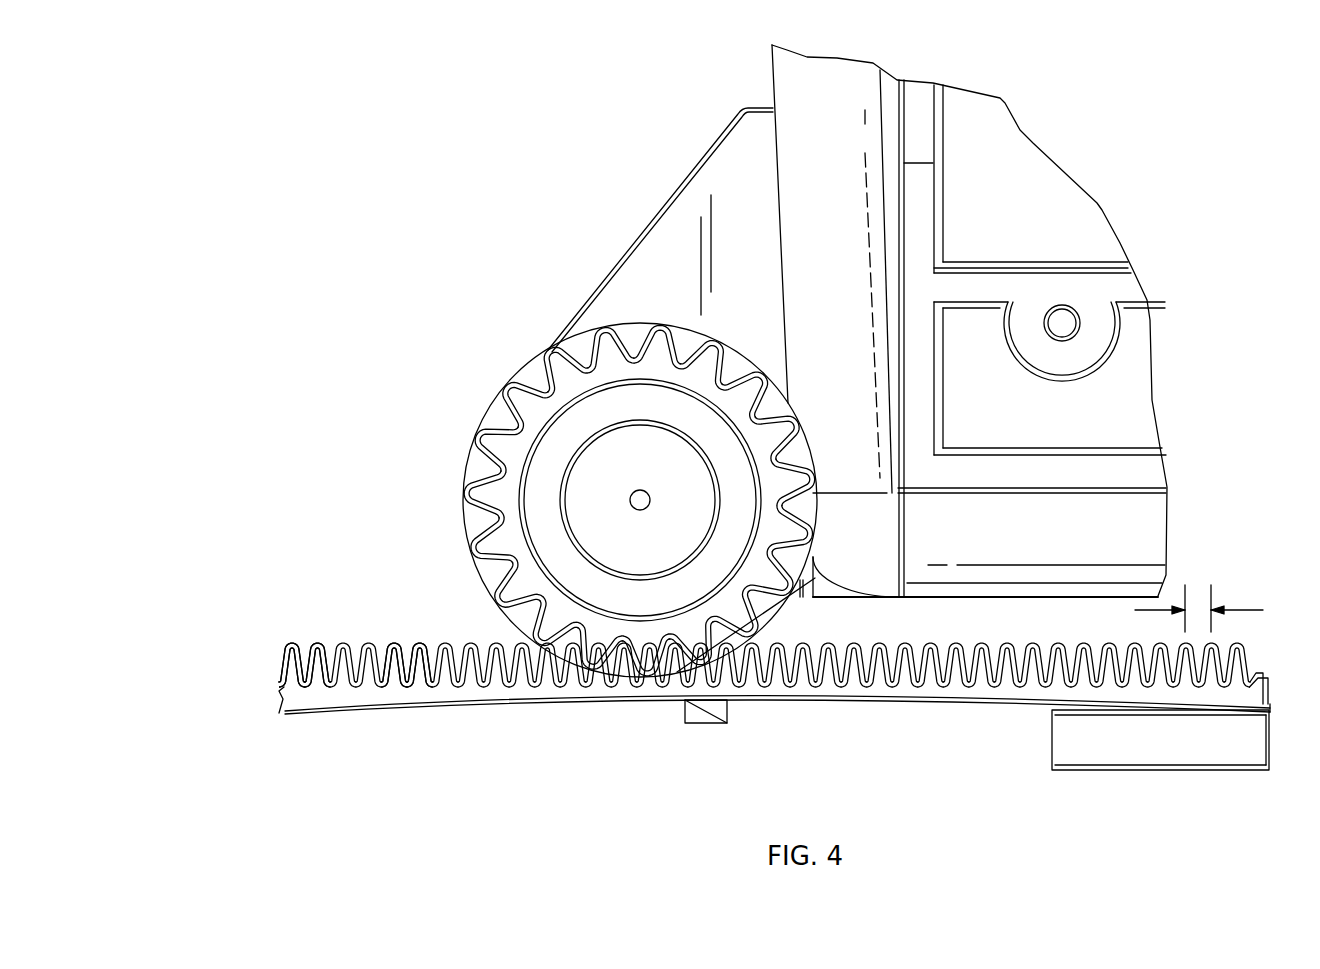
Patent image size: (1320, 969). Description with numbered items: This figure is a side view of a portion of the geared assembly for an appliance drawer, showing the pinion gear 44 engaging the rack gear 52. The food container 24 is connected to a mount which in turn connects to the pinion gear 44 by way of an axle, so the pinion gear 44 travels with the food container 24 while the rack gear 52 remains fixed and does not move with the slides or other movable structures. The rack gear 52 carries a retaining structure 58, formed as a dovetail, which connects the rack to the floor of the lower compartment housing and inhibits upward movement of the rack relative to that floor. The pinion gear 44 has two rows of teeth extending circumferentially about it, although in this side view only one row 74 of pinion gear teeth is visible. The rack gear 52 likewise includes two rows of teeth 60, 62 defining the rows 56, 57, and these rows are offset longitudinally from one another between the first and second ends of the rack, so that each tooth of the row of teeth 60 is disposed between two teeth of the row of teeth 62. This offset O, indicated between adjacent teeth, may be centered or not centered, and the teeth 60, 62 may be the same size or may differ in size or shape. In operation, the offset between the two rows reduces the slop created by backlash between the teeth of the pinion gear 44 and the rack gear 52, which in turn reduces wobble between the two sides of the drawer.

The food container 24 is at (1027, 195).
The pinion gear 44 is at (594, 466).
The row of pinion gear teeth 74 is at (473, 440).
The rack gear 52 is at (718, 631).
The row of rack teeth 56 is at (292, 641).
The row of rack teeth 57 is at (318, 641).
The rack teeth 60 is at (393, 643).
The rack teeth 62 is at (420, 643).
The retaining structure 58 is at (1202, 783).
The offset O is at (1247, 610).